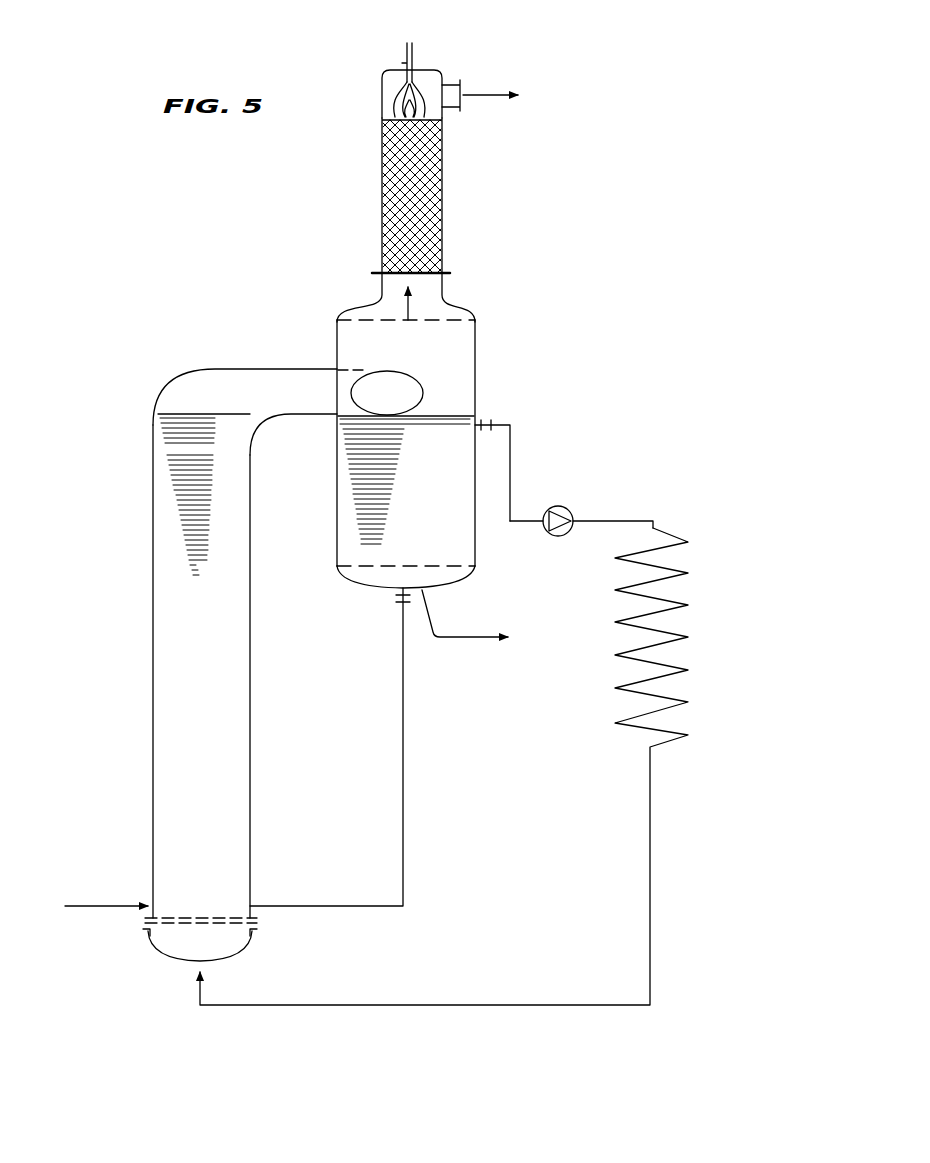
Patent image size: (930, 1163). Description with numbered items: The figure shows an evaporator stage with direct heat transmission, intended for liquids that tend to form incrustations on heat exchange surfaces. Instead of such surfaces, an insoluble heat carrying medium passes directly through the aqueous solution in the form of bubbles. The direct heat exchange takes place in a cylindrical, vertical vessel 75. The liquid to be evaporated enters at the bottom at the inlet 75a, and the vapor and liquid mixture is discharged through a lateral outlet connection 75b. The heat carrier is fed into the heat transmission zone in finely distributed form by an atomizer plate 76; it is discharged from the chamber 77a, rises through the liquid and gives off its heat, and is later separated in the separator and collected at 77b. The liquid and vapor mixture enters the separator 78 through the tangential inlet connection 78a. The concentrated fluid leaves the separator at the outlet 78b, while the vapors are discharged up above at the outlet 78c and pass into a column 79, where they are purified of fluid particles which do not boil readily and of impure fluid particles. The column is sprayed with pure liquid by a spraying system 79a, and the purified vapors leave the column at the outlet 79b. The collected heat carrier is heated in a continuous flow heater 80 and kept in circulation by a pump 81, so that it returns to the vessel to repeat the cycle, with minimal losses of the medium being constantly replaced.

The cylindrical vertical vessel 75 is at (158, 641).
The bottom inlet 75a is at (98, 903).
The lateral outlet connection 75b is at (245, 412).
The atomizer plate 76 is at (225, 930).
The chamber 77a is at (160, 948).
The heat carrier collection point 77b is at (478, 426).
The separator 78 is at (465, 386).
The tangential inlet connection 78a is at (404, 386).
The concentrated fluid outlet 78b is at (493, 620).
The vapor outlet 78c is at (446, 312).
The column 79 is at (445, 197).
The spraying system 79a is at (420, 68).
The purified vapor outlet 79b is at (506, 95).
The continuous flow heater 80 is at (680, 637).
The pump 81 is at (559, 506).